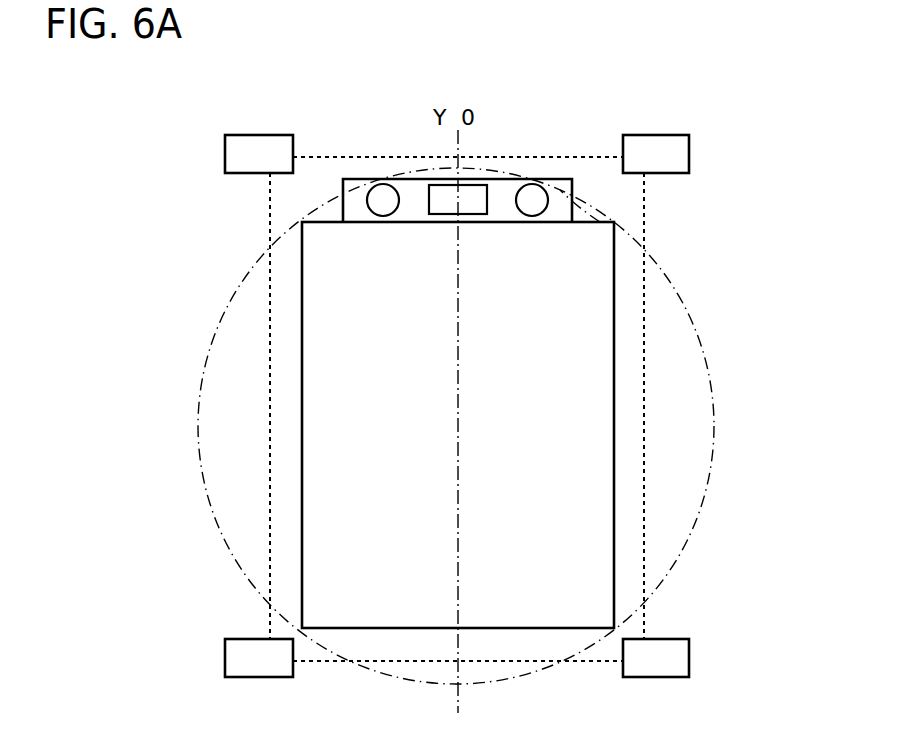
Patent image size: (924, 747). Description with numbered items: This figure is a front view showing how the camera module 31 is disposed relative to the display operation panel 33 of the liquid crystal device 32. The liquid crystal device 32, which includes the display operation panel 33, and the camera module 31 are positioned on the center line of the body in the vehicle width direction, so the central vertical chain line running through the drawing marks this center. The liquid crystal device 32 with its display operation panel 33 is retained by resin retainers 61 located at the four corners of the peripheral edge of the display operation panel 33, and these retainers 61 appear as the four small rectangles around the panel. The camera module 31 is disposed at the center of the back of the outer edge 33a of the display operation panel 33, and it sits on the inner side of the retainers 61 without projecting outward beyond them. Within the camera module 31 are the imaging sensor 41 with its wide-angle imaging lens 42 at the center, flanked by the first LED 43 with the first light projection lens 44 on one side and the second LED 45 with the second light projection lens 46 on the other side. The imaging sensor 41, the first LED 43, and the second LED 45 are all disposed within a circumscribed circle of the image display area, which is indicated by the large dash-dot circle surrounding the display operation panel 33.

The camera module 31 is at (417, 178).
The liquid crystal device 32 is at (614, 354).
The display operation panel 33 is at (650, 478).
The outer edge 33a is at (617, 210).
The imaging sensor 41 is at (498, 141).
The wide-angle imaging lens 42 is at (465, 192).
The first LED 43 is at (354, 142).
The first light projection lens 44 is at (383, 183).
The second LED 45 is at (591, 142).
The second light projection lens 46 is at (537, 190).
The resin retainer 61 is at (237, 160).